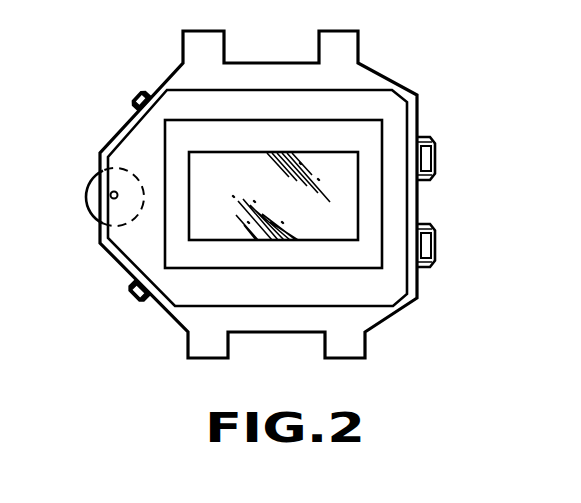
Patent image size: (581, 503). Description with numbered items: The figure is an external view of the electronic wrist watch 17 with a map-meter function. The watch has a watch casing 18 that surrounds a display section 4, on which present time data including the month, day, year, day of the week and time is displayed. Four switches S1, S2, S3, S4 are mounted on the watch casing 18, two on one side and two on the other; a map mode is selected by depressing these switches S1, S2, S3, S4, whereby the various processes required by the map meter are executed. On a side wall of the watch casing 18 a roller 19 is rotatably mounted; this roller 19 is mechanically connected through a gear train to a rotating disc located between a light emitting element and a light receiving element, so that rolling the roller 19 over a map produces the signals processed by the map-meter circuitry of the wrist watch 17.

The electronic wrist watch 17 is at (400, 68).
The watch casing 18 is at (368, 308).
The display section 4 is at (337, 212).
The roller 19 is at (97, 204).
The switch S1 is at (437, 153).
The switch S2 is at (437, 248).
The switch S3 is at (131, 99).
The switch S4 is at (135, 302).